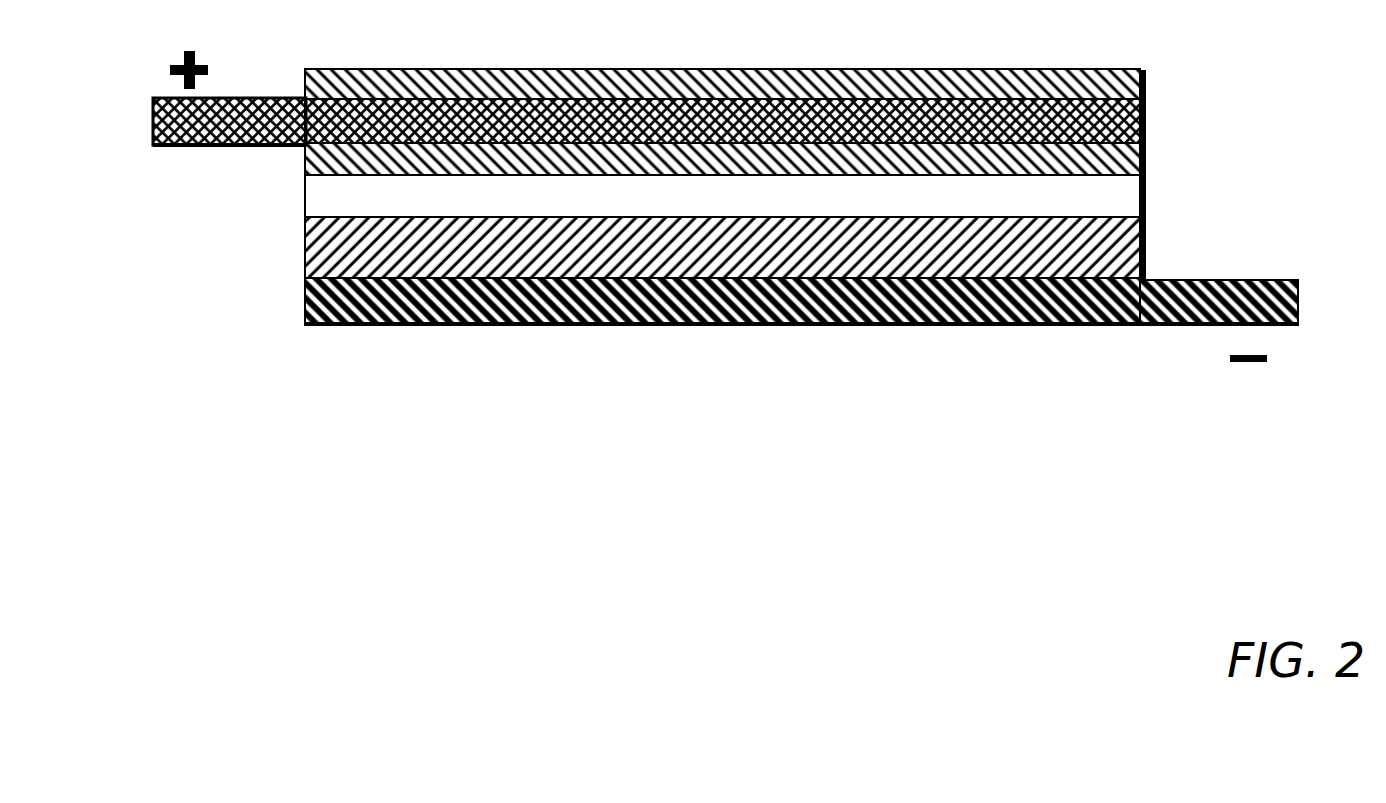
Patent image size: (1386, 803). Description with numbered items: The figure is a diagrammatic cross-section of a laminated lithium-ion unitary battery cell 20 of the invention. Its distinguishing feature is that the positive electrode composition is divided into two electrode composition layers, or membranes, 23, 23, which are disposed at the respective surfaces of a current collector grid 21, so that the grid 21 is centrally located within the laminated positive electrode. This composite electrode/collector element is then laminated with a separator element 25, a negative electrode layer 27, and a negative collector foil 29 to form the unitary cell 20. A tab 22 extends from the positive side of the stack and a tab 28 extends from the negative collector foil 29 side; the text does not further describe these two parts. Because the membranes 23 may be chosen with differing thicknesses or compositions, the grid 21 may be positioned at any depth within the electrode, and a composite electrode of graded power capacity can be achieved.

The unitary battery cell 20 is at (684, 397).
The current collector grid 21 is at (1146, 125).
The positive terminal tab 22 is at (153, 117).
The positive electrode composition layer 23 is at (1146, 80).
The separator element 25 is at (1132, 198).
The negative electrode layer 27 is at (305, 240).
The negative terminal tab 28 is at (1298, 307).
The negative collector foil 29 is at (305, 298).